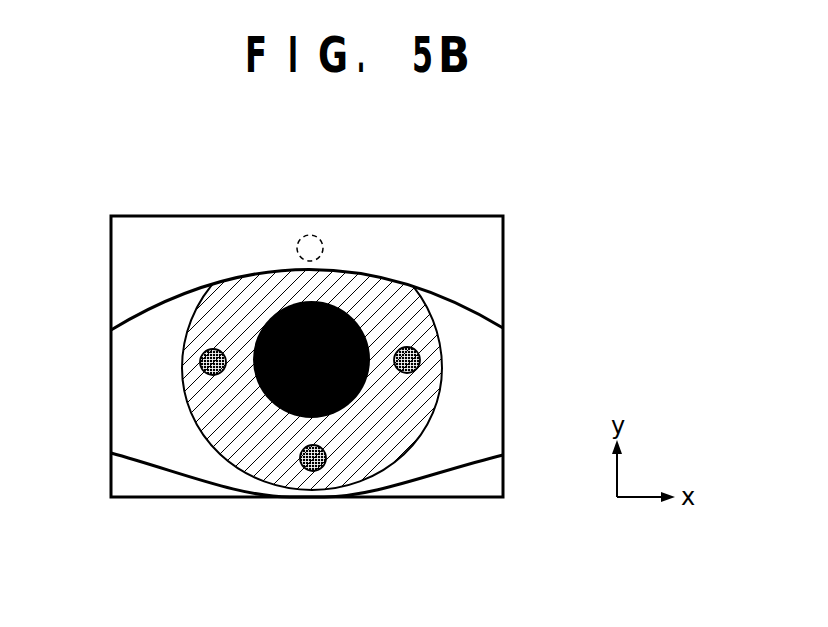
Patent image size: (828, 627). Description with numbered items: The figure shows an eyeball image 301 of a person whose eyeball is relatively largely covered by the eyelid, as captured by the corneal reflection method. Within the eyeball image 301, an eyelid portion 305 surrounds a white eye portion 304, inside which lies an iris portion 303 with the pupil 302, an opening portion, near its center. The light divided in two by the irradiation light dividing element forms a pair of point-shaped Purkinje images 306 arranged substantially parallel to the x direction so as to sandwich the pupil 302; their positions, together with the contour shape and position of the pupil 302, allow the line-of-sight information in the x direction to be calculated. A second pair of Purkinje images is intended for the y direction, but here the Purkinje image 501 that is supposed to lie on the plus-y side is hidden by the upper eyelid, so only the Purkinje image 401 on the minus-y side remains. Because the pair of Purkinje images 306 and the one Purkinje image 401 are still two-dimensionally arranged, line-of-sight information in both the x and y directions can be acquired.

The eyeball image 301 is at (228, 170).
The pupil 302 is at (350, 310).
The iris portion 303 is at (358, 460).
The white eye portion 304 is at (485, 425).
The eyelid portion 305 is at (148, 219).
The Purkinje images 306 is at (200, 361).
The Purkinje image 401 is at (313, 471).
The Purkinje image 501 is at (310, 235).